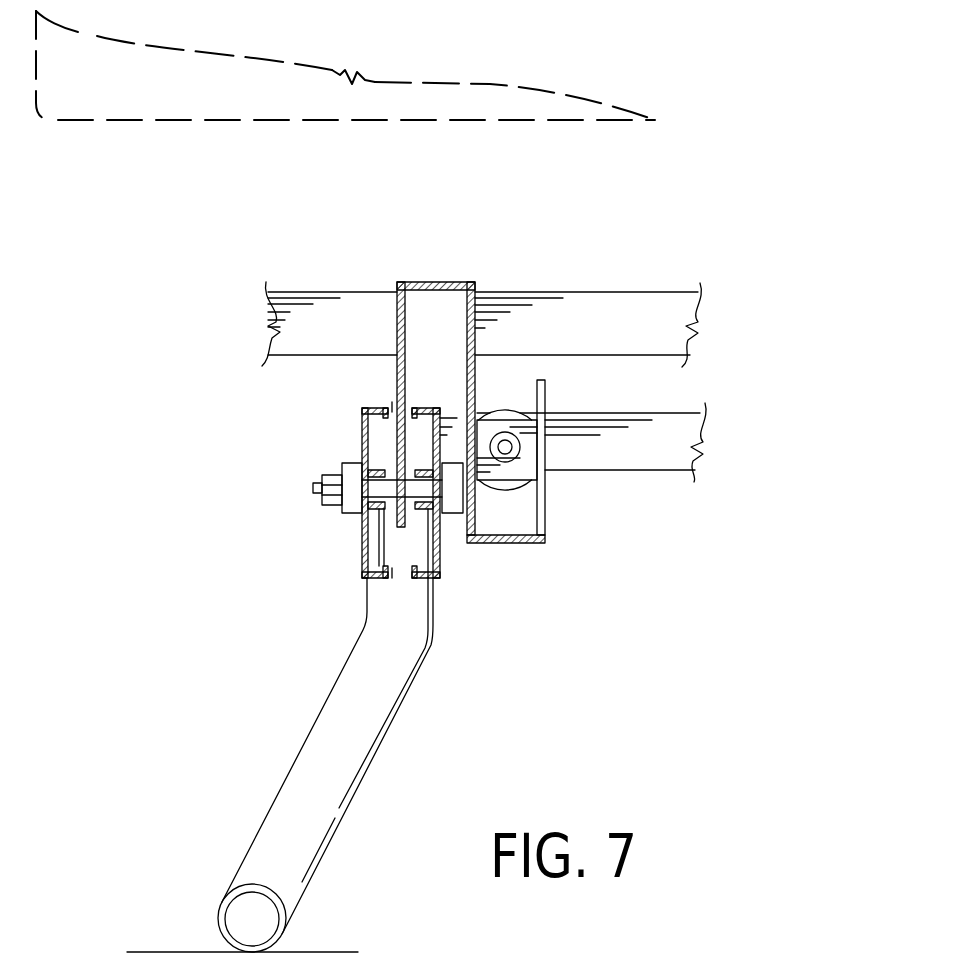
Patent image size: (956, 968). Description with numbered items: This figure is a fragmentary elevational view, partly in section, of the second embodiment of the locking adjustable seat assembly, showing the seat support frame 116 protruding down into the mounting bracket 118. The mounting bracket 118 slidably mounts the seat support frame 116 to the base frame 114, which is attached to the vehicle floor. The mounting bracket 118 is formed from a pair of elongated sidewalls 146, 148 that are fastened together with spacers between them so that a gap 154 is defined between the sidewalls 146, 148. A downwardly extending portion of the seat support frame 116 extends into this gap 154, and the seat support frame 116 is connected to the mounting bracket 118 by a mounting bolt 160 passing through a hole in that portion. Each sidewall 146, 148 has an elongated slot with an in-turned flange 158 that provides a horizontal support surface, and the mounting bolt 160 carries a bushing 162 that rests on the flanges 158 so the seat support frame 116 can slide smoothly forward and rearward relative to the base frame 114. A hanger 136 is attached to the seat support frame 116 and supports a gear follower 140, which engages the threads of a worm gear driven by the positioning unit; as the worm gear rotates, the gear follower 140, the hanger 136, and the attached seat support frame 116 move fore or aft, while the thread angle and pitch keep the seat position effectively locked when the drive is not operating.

The base frame 114 is at (287, 773).
The seat support frame 116 is at (403, 281).
The mounting bracket 118 is at (357, 535).
The hanger 136 is at (508, 543).
The gear follower 140 is at (489, 428).
The sidewall 146 is at (362, 435).
The sidewall 148 is at (443, 550).
The gap 154 is at (392, 408).
The in-turned flange 158 is at (360, 573).
The mounting bolt 160 is at (310, 488).
The bushing 162 is at (337, 517).